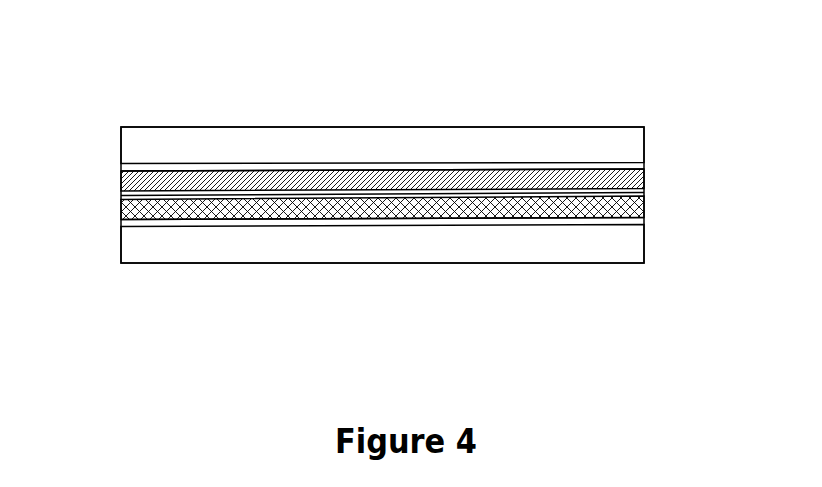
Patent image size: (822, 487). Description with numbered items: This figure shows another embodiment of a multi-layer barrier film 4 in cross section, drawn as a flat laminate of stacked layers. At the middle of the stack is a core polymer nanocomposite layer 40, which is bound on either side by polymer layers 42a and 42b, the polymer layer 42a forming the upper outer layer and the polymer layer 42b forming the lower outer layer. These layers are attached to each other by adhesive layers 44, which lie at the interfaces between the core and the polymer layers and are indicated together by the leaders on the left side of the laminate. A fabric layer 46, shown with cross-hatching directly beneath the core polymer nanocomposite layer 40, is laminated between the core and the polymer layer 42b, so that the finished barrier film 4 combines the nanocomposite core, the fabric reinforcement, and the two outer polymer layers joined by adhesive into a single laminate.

The multi-layer barrier film 4 is at (413, 93).
The polymer layer 42a is at (645, 138).
The core polymer nanocomposite layer 40 is at (655, 175).
The fabric layer 46 is at (655, 206).
The polymer layer 42b is at (645, 237).
The adhesive layers 44 is at (121, 221).